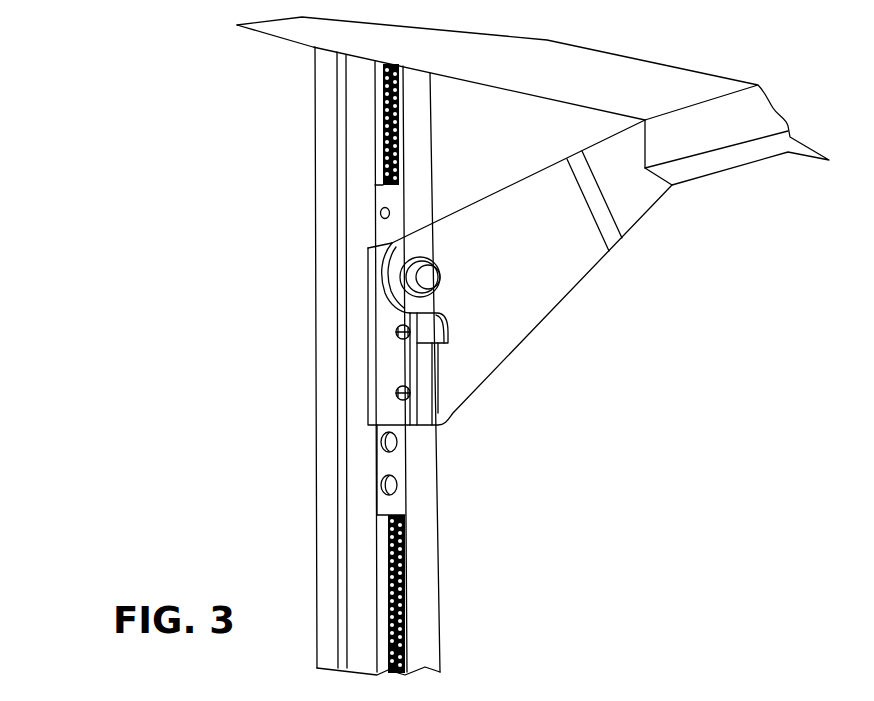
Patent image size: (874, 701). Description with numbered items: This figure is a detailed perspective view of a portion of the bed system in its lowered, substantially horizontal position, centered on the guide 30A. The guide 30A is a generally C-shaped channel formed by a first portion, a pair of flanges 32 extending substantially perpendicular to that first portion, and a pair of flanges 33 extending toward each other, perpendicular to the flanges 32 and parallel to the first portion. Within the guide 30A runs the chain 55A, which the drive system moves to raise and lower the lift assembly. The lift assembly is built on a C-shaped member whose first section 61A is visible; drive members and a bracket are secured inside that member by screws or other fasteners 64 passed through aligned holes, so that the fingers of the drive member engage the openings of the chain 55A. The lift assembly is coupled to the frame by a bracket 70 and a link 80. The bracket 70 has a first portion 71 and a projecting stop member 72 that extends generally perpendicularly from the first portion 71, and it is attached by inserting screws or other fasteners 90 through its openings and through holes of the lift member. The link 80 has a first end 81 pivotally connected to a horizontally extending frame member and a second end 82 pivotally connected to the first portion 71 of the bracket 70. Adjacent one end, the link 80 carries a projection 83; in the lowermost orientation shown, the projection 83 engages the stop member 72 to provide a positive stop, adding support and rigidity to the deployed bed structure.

The guide 30A is at (370, 361).
The flanges 32 is at (325, 432).
The flanges 33 is at (357, 630).
The chain 55A is at (403, 572).
The first section 61A is at (383, 198).
The fasteners 64 is at (397, 483).
The bracket 70 is at (330, 362).
The first portion 71 is at (380, 375).
The stop member 72 is at (442, 411).
The link 80 is at (463, 272).
The first end 81 is at (637, 193).
The second end 82 is at (407, 237).
The projection 83 is at (487, 360).
The fasteners 90 is at (397, 330).